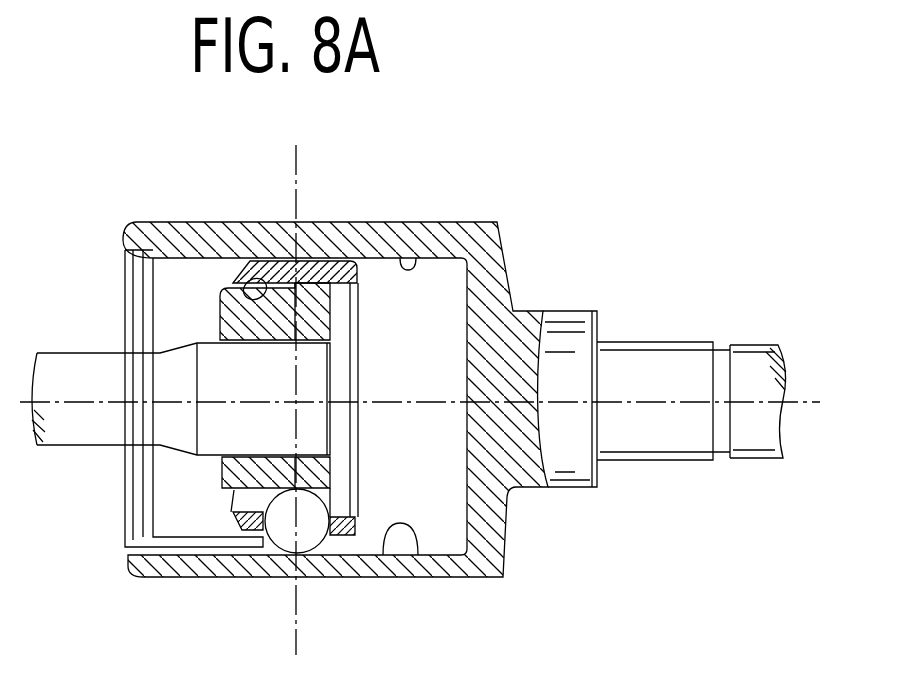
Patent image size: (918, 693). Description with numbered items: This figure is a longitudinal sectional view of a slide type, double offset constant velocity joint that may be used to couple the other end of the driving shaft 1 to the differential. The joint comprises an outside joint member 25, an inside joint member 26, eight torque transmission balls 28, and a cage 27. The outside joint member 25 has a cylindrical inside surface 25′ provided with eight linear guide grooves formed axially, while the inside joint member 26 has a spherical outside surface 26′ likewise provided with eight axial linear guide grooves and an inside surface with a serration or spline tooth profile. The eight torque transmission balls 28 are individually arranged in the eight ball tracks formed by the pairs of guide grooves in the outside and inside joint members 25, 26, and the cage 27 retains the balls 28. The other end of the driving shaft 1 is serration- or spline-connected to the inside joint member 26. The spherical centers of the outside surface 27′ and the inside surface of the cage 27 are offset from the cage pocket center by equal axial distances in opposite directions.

The driving shaft 1 is at (97, 437).
The outside joint member 25 is at (482, 557).
The cylindrical inside surface 25′ is at (425, 257).
The inside joint member 26 is at (250, 477).
The spherical outside surface 26′ is at (252, 280).
The cage 27 is at (252, 515).
The outside surface 27′ is at (352, 262).
The torque transmission balls 28 is at (313, 538).